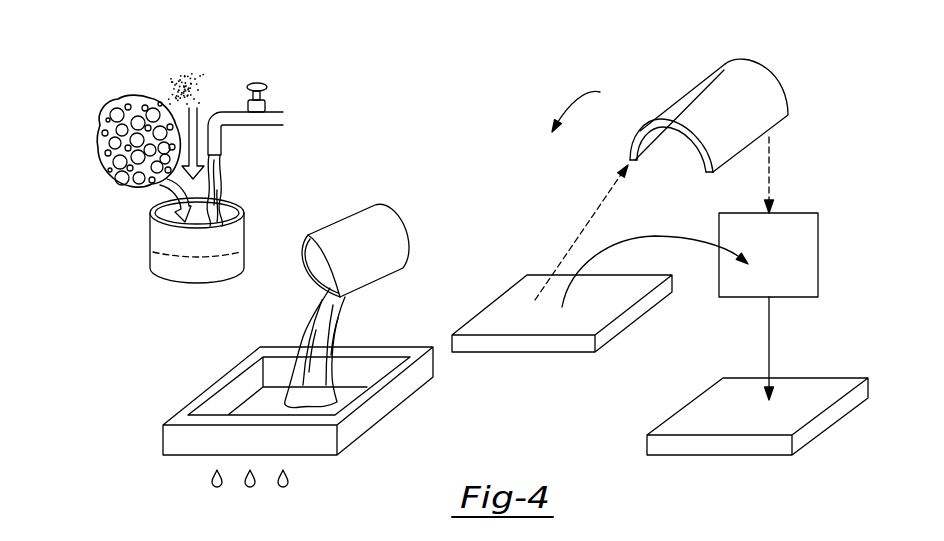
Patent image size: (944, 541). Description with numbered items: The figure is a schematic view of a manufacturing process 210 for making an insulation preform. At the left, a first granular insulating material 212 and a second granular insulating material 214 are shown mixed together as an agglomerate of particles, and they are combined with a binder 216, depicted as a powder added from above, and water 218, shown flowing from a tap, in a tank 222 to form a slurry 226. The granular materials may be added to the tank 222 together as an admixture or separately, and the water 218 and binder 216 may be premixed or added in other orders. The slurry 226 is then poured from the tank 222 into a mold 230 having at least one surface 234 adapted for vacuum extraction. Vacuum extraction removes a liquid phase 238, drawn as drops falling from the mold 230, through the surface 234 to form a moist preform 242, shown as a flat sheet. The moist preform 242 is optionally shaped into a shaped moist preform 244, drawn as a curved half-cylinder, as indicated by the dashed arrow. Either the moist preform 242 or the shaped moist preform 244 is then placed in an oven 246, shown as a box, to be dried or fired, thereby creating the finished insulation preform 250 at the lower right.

The manufacturing process 210 is at (591, 105).
The first granular insulating material 212 is at (117, 112).
The second granular insulating material 214 is at (110, 181).
The binder 216 is at (172, 90).
The water 218 is at (219, 170).
The tank 222 is at (243, 231).
The slurry 226 is at (177, 265).
The mold 230 is at (423, 347).
The surface 234 is at (418, 394).
The liquid phase 238 is at (291, 483).
The moist preform 242 is at (493, 307).
The shaped moist preform 244 is at (770, 108).
The oven 246 is at (792, 230).
The insulation preform 250 is at (805, 397).